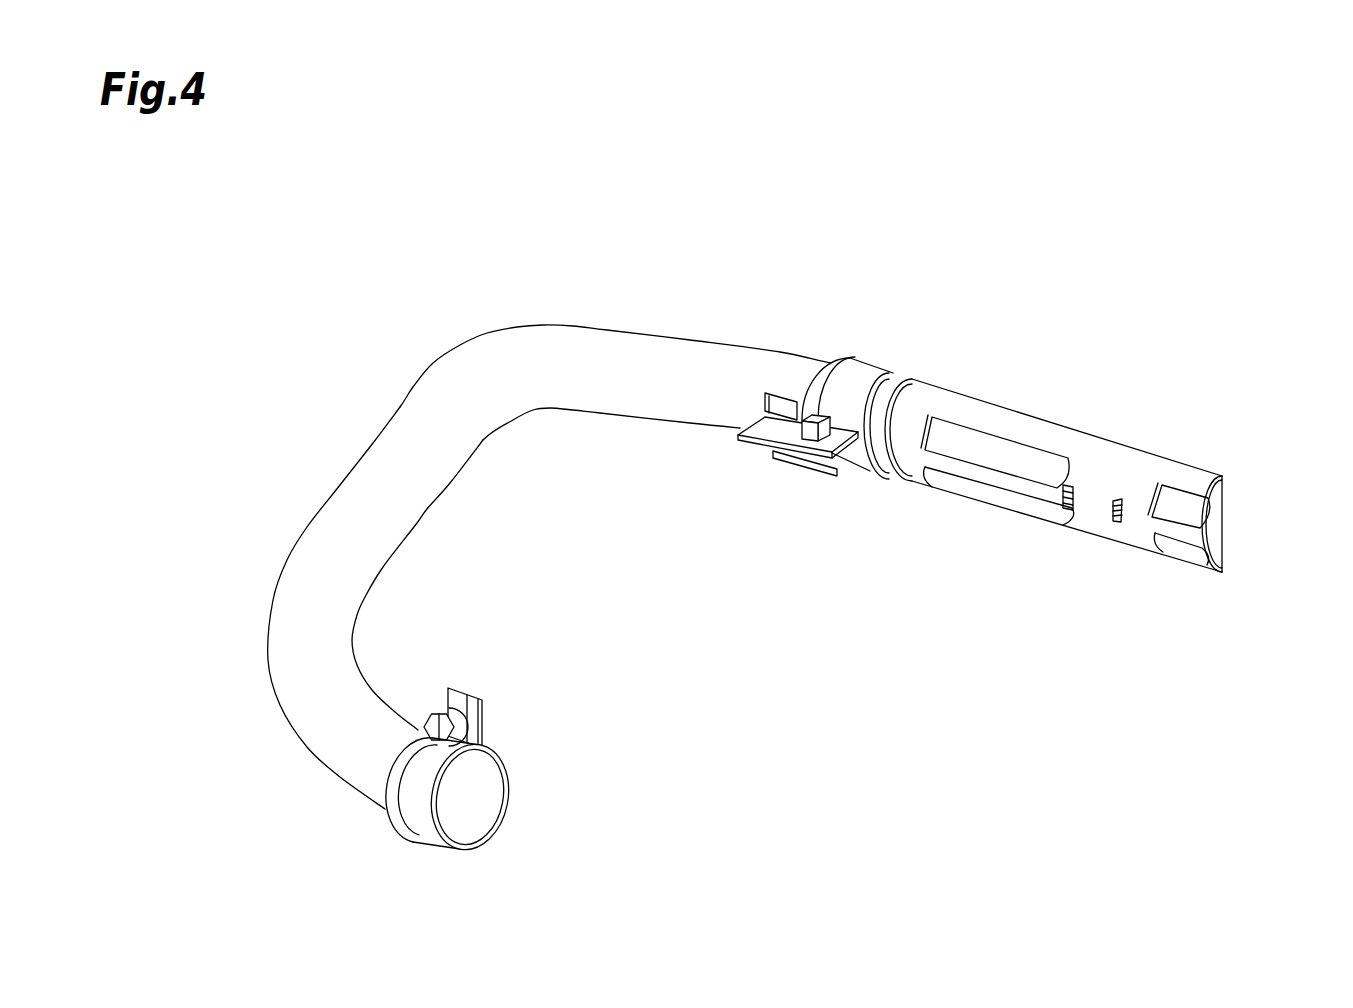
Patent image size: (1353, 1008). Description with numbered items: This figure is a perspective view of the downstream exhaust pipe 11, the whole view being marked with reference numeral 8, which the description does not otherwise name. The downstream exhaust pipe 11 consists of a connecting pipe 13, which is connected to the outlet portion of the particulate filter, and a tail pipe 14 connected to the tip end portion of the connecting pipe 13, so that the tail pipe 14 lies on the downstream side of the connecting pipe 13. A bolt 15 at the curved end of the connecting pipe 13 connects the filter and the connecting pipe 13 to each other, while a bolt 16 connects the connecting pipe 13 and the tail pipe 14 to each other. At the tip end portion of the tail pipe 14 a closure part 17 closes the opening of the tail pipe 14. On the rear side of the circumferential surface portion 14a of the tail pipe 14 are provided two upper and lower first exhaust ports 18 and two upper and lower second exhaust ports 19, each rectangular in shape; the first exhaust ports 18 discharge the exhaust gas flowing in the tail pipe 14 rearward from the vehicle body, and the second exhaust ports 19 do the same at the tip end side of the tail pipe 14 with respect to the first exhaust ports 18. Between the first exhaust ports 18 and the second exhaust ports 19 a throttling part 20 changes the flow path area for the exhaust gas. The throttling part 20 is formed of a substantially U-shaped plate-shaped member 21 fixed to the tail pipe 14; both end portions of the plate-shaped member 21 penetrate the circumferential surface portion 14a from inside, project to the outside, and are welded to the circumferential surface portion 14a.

The exhaust pipe assembly 8 is at (595, 228).
The downstream exhaust pipe 11 is at (403, 402).
The connecting pipe 13 is at (307, 527).
The tail pipe 14 is at (1073, 430).
The circumferential surface portion 14a is at (1133, 465).
The bolt 15 is at (441, 695).
The bolt 16 is at (820, 416).
The closure part 17 is at (1230, 523).
The first exhaust port 18 is at (978, 447).
The second exhaust port 19 is at (1178, 503).
The throttling part 20 is at (1079, 551).
The plate-shaped member 21 is at (1115, 507).